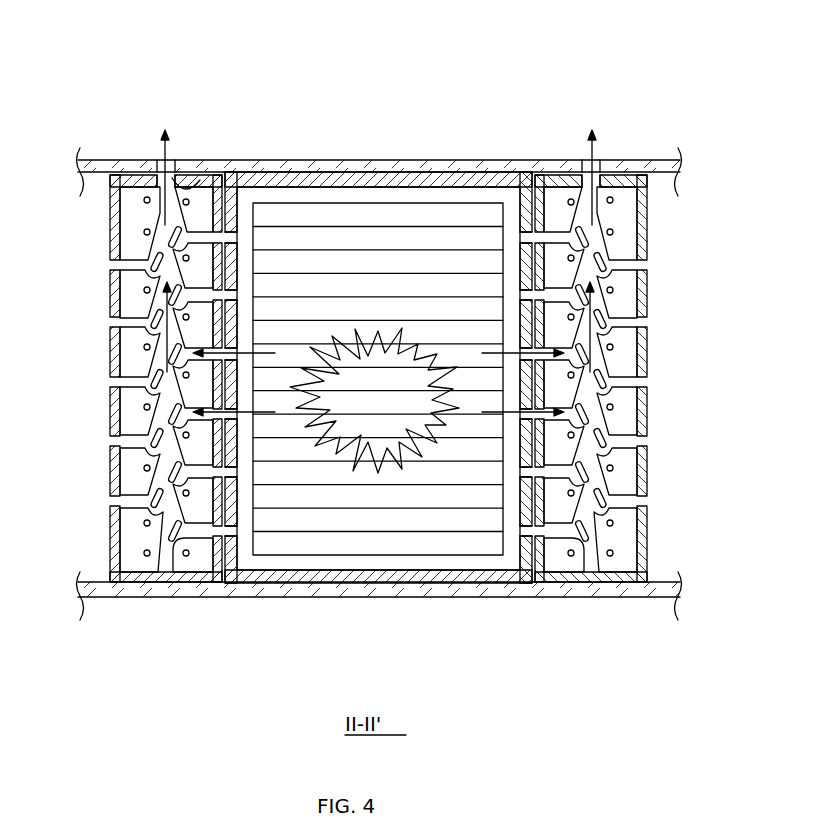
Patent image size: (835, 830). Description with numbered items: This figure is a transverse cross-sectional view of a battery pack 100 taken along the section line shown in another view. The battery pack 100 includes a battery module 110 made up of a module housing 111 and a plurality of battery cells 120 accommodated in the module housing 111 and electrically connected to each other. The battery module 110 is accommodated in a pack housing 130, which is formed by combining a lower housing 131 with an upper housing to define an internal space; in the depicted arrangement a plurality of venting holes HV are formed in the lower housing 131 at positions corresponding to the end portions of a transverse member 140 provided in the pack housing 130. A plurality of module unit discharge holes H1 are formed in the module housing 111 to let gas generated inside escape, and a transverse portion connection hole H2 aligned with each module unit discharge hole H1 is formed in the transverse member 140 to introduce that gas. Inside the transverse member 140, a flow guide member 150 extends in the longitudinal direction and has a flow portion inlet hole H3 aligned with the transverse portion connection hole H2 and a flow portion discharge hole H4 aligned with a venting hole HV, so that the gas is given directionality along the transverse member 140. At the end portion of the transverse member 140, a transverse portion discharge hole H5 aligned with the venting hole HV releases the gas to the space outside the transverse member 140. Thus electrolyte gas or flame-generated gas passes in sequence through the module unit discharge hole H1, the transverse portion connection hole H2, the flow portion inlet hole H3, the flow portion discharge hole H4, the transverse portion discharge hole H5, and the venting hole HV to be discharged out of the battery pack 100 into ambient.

The battery pack 100 is at (86, 44).
The battery module 110 is at (353, 173).
The battery cell 120 is at (447, 215).
The module housing 111 is at (362, 578).
The pack housing 130 is at (462, 590).
The lower housing 131 is at (379, 626).
The transverse member 140 is at (112, 522).
The flow guide member 150 is at (135, 462).
The module unit discharge hole H1 is at (236, 535).
The transverse portion connection hole H2 is at (204, 545).
The flow portion inlet hole H3 is at (200, 298).
The flow portion discharge hole H4 is at (162, 185).
The transverse portion discharge hole H5 is at (197, 185).
The venting hole HV is at (158, 170).